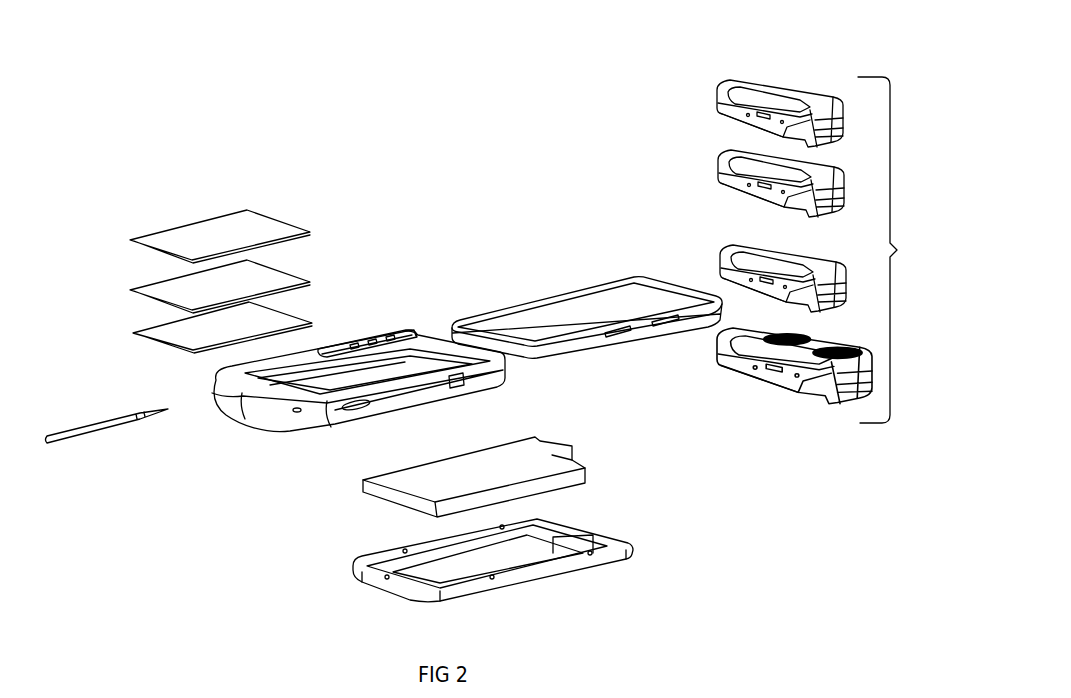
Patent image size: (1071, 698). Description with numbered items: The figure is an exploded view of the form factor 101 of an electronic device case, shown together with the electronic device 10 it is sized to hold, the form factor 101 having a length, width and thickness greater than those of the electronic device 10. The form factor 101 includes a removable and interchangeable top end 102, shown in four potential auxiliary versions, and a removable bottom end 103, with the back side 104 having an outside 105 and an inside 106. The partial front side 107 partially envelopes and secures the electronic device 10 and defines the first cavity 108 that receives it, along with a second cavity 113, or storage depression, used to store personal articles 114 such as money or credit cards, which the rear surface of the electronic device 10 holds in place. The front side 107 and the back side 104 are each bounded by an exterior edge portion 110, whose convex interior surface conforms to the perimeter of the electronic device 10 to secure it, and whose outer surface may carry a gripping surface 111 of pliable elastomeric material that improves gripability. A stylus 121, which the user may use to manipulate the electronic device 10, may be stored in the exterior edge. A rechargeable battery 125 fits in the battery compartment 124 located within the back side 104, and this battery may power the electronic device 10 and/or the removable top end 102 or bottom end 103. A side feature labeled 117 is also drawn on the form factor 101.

The form factor 101 is at (432, 167).
The top end 102 is at (832, 245).
The bottom end 103 is at (344, 391).
The back side 104 is at (565, 573).
The outside 105 is at (518, 591).
The inside 106 is at (328, 352).
The front side 107 is at (400, 328).
The first cavity 108 is at (341, 350).
The electronic device 10 is at (610, 316).
The exterior edge portion 110 is at (790, 82).
The gripping surface 111 is at (328, 425).
The second cavity 113 is at (365, 375).
The personal articles 114 is at (238, 245).
The side button 117 is at (490, 392).
The stylus 121 is at (70, 428).
The battery compartment 124 is at (428, 568).
The rechargeable battery 125 is at (585, 468).